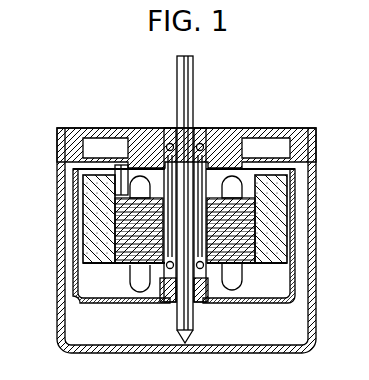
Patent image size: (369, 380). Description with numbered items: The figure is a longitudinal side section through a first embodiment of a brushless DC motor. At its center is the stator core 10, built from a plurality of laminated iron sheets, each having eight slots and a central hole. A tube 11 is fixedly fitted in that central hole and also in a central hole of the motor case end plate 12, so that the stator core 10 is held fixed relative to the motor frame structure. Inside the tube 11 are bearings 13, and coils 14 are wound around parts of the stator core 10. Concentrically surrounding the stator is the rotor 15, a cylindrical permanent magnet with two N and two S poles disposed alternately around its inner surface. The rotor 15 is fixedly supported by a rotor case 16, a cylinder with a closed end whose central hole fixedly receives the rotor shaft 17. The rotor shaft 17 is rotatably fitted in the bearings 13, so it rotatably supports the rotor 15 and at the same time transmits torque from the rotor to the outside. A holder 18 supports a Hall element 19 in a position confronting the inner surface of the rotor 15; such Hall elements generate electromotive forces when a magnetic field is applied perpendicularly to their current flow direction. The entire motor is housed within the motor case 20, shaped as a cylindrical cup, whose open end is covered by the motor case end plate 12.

The stator core 10 is at (283, 228).
The tube 11 is at (157, 273).
The motor case end plate 12 is at (235, 128).
The bearings 13 is at (172, 132).
The coils 14 is at (242, 278).
The rotor 15 is at (83, 217).
The rotor case 16 is at (77, 283).
The rotor shaft 17 is at (194, 88).
The holder 18 is at (127, 187).
The Hall element 19 is at (117, 185).
The motor case 20 is at (316, 298).